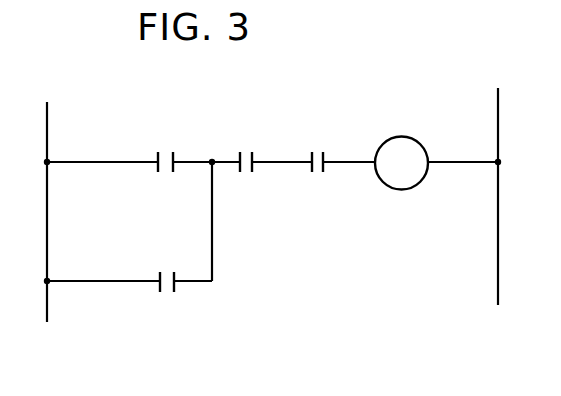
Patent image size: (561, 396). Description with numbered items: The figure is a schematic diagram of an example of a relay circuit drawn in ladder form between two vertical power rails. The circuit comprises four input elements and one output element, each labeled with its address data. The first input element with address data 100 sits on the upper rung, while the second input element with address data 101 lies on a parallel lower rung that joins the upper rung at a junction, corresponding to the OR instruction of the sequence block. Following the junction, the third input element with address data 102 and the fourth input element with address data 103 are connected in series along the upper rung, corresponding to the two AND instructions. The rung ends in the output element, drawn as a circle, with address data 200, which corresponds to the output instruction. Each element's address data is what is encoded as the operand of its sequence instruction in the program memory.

The address data of input element X1 100 is at (168, 158).
The address data of input element X2 101 is at (170, 283).
The address data of input element X3 102 is at (252, 158).
The address data of input element X4 103 is at (322, 158).
The address data of output element Y4 200 is at (411, 167).